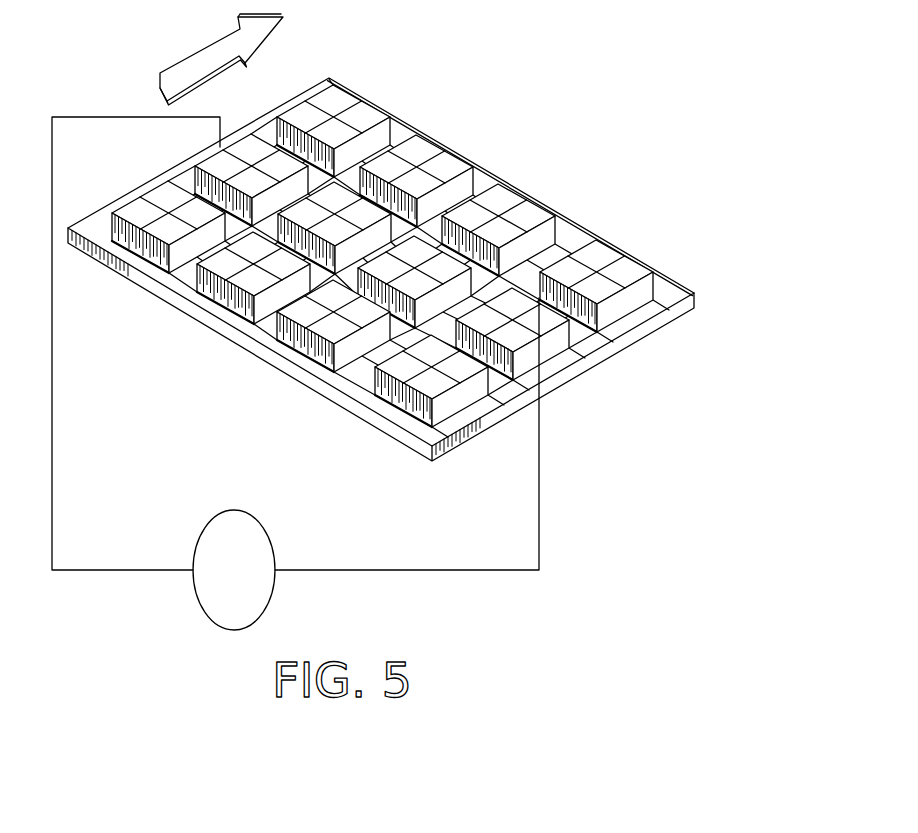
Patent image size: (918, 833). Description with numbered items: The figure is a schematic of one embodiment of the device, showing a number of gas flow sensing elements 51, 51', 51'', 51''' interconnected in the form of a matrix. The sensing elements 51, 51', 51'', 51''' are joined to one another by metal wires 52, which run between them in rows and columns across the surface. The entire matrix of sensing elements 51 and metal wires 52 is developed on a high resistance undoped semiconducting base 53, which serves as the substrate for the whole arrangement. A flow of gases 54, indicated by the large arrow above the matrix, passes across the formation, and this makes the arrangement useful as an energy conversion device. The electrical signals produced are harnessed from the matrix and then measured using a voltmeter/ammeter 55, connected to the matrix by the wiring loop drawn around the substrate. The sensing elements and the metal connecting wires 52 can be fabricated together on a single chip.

The gas flow sensing element 51 is at (159, 203).
The gas flow sensing element 51' is at (251, 145).
The gas flow sensing element 51'' is at (333, 101).
The gas flow sensing element 51''' is at (228, 295).
The metal wires 52 is at (380, 345).
The high resistance undoped semiconducting base 53 is at (263, 352).
The flow of gases 54 is at (197, 48).
The voltmeter/ammeter 55 is at (265, 527).